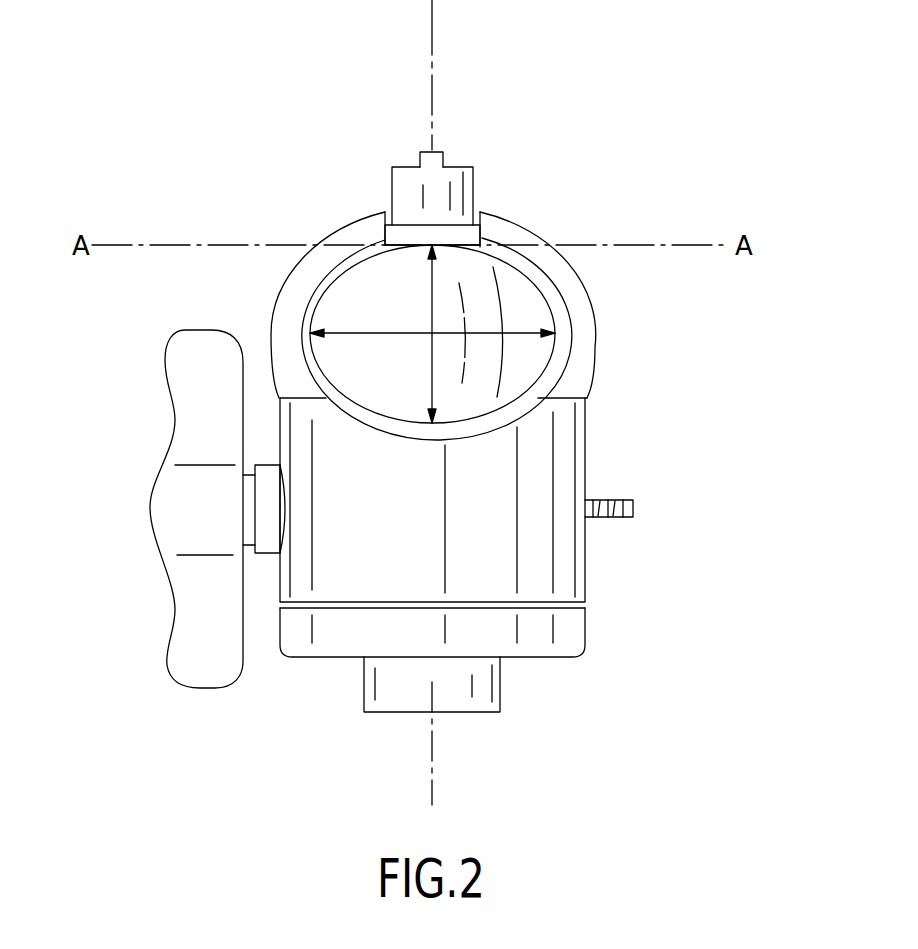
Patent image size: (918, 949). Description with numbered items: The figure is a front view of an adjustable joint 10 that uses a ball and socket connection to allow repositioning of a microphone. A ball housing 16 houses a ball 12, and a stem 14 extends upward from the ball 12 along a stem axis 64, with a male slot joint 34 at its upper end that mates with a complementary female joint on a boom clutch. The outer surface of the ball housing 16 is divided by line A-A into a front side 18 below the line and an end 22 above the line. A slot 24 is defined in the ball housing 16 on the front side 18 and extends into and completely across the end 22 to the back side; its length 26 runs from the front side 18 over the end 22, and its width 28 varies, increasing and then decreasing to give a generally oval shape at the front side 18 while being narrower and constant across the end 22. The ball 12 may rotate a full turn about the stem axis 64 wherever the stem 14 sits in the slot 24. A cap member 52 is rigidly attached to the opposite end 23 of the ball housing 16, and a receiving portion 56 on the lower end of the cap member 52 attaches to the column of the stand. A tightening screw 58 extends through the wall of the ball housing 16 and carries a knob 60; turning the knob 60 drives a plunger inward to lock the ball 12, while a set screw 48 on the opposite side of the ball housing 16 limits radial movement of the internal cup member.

The adjustable joint 10 is at (647, 118).
The ball 12 is at (518, 307).
The stem 14 is at (462, 192).
The ball housing 16 is at (287, 290).
The front side 18 is at (574, 368).
The end 22 is at (384, 214).
The end 23 is at (341, 603).
The slot 24 is at (497, 291).
The length 26 is at (432, 370).
The width 28 is at (414, 333).
The male slot joint 34 is at (438, 157).
The set screw 48 is at (616, 517).
The cap member 52 is at (558, 630).
The receiving portion 56 is at (463, 712).
The tightening screw 58 is at (249, 510).
The knob 60 is at (198, 583).
The stem axis 64 is at (432, 55).